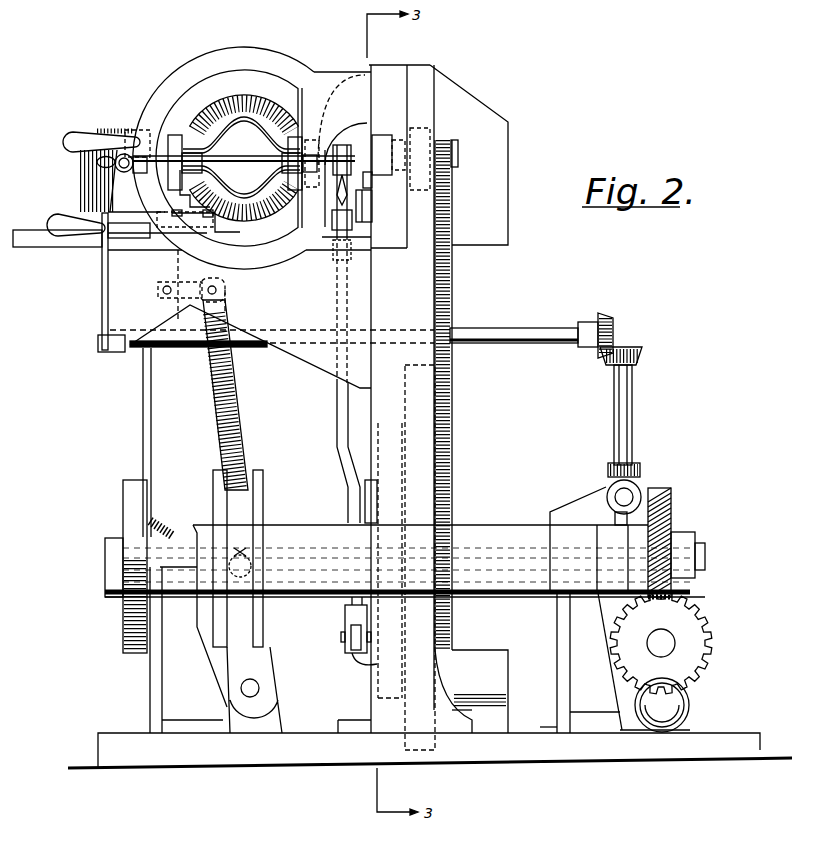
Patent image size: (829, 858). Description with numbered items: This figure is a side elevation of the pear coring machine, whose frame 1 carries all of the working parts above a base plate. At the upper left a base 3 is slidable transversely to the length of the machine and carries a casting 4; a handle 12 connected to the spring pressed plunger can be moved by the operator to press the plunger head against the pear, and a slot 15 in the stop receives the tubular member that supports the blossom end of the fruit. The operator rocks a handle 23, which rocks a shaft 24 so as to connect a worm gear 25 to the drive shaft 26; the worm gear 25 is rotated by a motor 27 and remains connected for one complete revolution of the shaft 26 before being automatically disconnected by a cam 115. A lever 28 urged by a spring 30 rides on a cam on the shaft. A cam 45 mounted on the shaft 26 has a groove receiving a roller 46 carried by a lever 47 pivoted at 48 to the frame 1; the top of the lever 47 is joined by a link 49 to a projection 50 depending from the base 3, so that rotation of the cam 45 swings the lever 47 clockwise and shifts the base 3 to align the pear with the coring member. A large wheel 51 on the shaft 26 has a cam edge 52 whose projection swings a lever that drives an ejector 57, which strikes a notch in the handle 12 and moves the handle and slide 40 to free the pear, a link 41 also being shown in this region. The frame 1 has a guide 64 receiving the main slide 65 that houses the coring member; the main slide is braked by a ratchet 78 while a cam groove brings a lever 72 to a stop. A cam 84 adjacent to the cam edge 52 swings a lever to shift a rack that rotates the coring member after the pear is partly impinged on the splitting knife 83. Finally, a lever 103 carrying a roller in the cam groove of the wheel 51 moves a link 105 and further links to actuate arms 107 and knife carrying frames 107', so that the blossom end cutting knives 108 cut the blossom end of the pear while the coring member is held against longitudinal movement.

The frame 1 is at (297, 737).
The base 3 is at (34, 243).
The casting 4 is at (119, 222).
The handle 12 is at (63, 143).
The slot 15 is at (97, 162).
The handle 23 is at (62, 218).
The shaft 24 is at (540, 323).
The worm gear 25 is at (664, 490).
The drive shaft 26 is at (496, 538).
The motor 27 is at (130, 620).
The lever 28 is at (147, 400).
The spring 30 is at (160, 525).
The slide 40 is at (188, 225).
The link 41 is at (215, 224).
The cam 45 is at (215, 490).
The roller 46 is at (240, 554).
The lever 47 is at (236, 401).
The pivot 48 is at (259, 688).
The link 49 is at (200, 275).
The projection 50 is at (162, 257).
The large wheel 51 is at (426, 393).
The cam edge 52 is at (395, 420).
The ejector 57 is at (373, 214).
The guide 64 is at (370, 185).
The main slide 65 is at (381, 138).
The lever 72 is at (452, 198).
The ratchet 78 is at (422, 132).
The splitting knife 83 is at (241, 153).
The cam 84 is at (390, 411).
The lever 103 is at (358, 668).
The link 105 is at (337, 401).
The arms 107 is at (243, 208).
The knife carrying frames 107' is at (243, 104).
The blossom end cutting knives 108 is at (258, 128).
The cam 115 is at (618, 517).